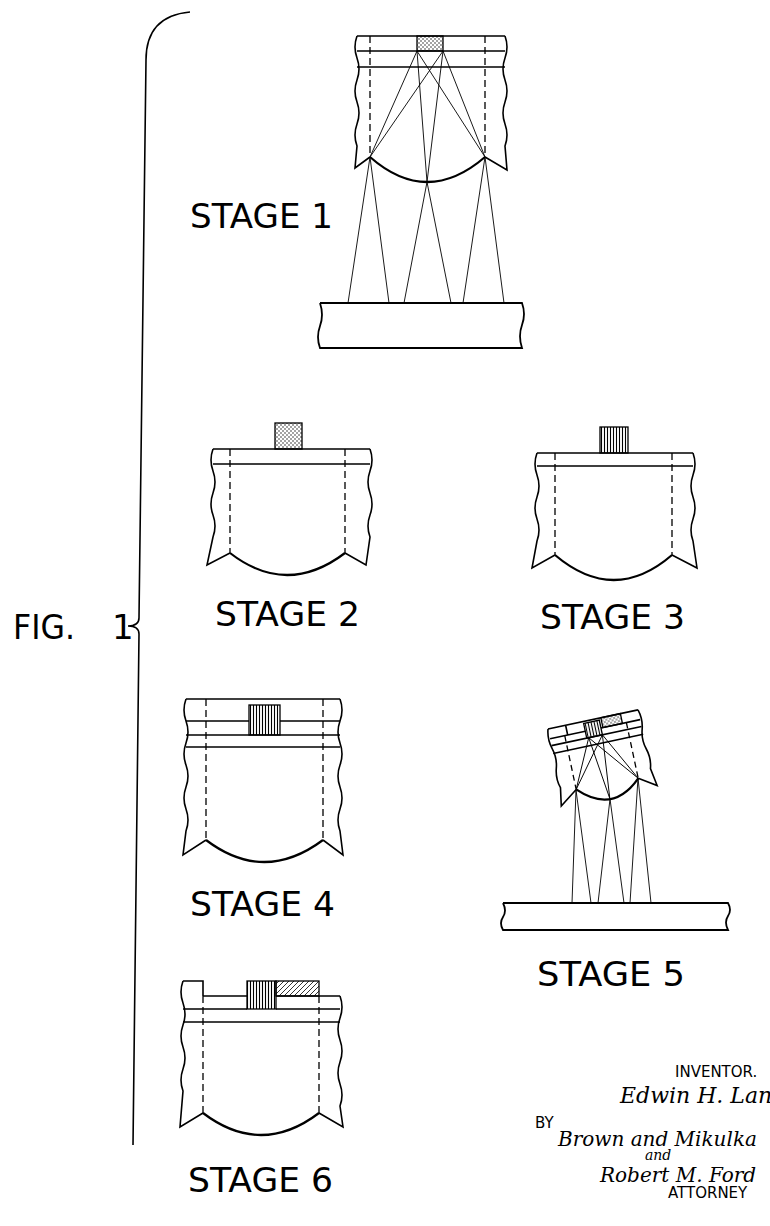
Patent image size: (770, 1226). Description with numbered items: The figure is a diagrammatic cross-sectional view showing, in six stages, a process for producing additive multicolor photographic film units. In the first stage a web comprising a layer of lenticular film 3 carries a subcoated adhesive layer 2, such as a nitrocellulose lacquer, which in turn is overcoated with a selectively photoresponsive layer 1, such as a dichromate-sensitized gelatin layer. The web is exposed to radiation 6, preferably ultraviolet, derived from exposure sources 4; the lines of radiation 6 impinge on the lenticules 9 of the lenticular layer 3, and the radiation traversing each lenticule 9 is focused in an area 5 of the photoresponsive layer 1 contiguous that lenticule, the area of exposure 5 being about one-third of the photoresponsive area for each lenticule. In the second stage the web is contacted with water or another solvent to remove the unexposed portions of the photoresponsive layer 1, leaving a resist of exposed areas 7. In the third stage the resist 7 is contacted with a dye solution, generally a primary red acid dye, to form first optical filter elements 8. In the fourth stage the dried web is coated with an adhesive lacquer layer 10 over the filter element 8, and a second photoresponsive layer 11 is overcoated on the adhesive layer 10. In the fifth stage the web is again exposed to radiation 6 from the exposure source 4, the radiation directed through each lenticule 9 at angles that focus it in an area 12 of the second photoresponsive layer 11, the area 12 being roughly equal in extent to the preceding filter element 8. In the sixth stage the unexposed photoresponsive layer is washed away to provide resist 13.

The photoresponsive layer 1 is at (505, 45).
The adhesive layer 2 is at (500, 62).
The lenticular film 3 is at (505, 118).
The exposure source 4 is at (522, 325).
The area of exposure 5 is at (427, 36).
The radiation 6 is at (500, 250).
The exposed areas 7 is at (288, 423).
The optical filter element 8 is at (614, 427).
The lenticule 9 is at (468, 163).
The adhesive lacquer layer 10 is at (340, 728).
The second photoresponsive layer 11 is at (340, 710).
The area 12 is at (611, 716).
The resist 13 is at (285, 981).